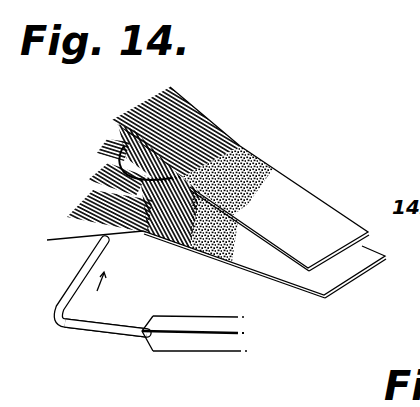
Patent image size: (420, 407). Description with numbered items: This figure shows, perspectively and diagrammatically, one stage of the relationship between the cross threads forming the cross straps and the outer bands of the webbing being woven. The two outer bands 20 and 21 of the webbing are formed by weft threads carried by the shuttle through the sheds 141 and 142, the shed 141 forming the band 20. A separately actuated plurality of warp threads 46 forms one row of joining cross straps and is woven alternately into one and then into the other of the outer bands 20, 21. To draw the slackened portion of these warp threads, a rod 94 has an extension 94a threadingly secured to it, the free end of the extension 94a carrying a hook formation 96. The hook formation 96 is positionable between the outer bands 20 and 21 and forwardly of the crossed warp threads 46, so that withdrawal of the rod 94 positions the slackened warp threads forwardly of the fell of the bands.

The outer band 20 is at (308, 199).
The outer band 21 is at (360, 248).
The warp threads 46 is at (123, 133).
The shed 141 is at (197, 112).
The shed 142 is at (76, 214).
The hook formation 96 is at (72, 277).
The extension 94a is at (97, 328).
The rod 94 is at (192, 347).